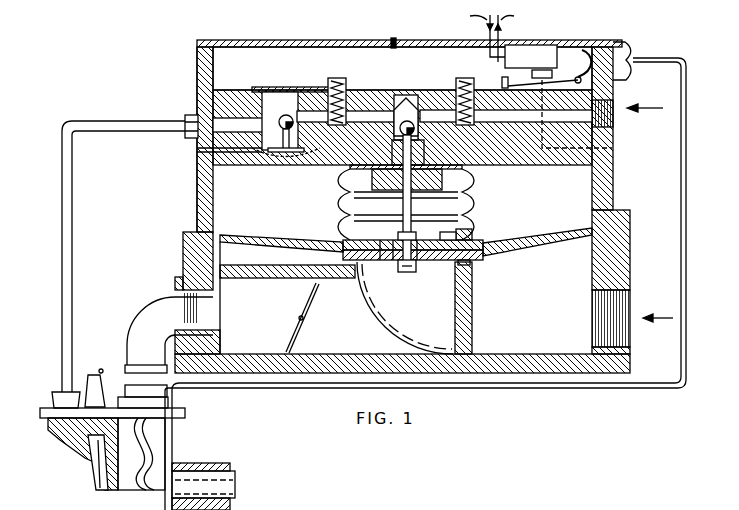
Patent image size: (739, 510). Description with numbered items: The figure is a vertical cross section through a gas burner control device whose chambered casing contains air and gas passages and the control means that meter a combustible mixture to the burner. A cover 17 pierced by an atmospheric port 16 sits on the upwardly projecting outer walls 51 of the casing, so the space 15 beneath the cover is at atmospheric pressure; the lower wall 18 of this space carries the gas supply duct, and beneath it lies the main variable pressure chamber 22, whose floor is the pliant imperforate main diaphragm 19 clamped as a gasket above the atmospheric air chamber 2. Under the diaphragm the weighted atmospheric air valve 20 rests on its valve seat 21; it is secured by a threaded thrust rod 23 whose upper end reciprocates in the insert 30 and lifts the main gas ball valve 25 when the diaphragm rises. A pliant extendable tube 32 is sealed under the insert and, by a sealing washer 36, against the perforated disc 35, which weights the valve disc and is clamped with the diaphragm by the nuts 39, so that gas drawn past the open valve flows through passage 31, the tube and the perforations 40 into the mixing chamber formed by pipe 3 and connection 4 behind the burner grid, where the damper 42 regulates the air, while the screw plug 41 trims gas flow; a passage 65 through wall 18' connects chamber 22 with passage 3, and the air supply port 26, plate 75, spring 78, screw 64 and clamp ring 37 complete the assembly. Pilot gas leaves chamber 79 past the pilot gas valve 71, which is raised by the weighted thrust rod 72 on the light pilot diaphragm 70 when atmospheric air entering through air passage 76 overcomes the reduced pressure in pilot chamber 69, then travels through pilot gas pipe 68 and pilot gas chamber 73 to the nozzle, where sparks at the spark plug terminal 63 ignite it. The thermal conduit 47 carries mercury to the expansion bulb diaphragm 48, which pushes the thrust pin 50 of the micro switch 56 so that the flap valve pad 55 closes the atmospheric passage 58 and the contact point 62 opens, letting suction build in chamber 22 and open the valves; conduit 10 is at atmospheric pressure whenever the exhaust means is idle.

The air chamber 2 is at (529, 319).
The mixing chamber passage 3 is at (249, 340).
The connection 4 is at (148, 443).
The conduit 10 is at (230, 488).
The space 15 is at (343, 48).
The atmospheric port 16 is at (395, 38).
The cover 17 is at (300, 40).
The wall 18 is at (425, 210).
The wall 18' is at (250, 200).
The main diaphragm 19 is at (543, 232).
The weighted atmospheric air valve 20 is at (448, 268).
The valve seat 21 is at (472, 283).
The variable pressure chamber 22 is at (580, 197).
The thrust rod 23 is at (457, 197).
The main gas valve 25 is at (398, 110).
The port 26 is at (185, 270).
The insert 30 is at (457, 178).
The passage 31 is at (392, 150).
The pliant extendable tube 32 is at (345, 192).
The perforated disc 35 is at (313, 240).
The sealing washer 36 is at (480, 248).
The clamp ring 37 is at (500, 232).
The nuts 39 is at (347, 236).
The perforations 40 is at (465, 232).
The flow regulating valve 41 is at (349, 90).
The damper 42 is at (295, 343).
The conduit 47 is at (668, 58).
The diaphragm 48 is at (623, 52).
The thrust pin 50 is at (586, 52).
The outer walls 51 is at (197, 70).
The flap valve pad 55 is at (502, 84).
The micro switch 56 is at (527, 50).
The atmospheric passage 58 is at (612, 150).
The contact point 62 is at (128, 391).
The spark plug terminal 63 is at (103, 487).
The screw 64 is at (104, 372).
The passage 65 is at (190, 257).
The pilot gas pipe 68 is at (192, 112).
The pilot variable pressure chamber 69 is at (262, 170).
The pilot diaphragm 70 is at (286, 170).
The pilot gas valve 71 is at (307, 88).
The valve thrust rod 72 is at (308, 168).
The pilot gas chamber 73 is at (88, 462).
The plate 75 is at (258, 90).
The air passage 76 is at (197, 151).
The spring 78 is at (330, 88).
The chamber 79 is at (284, 100).